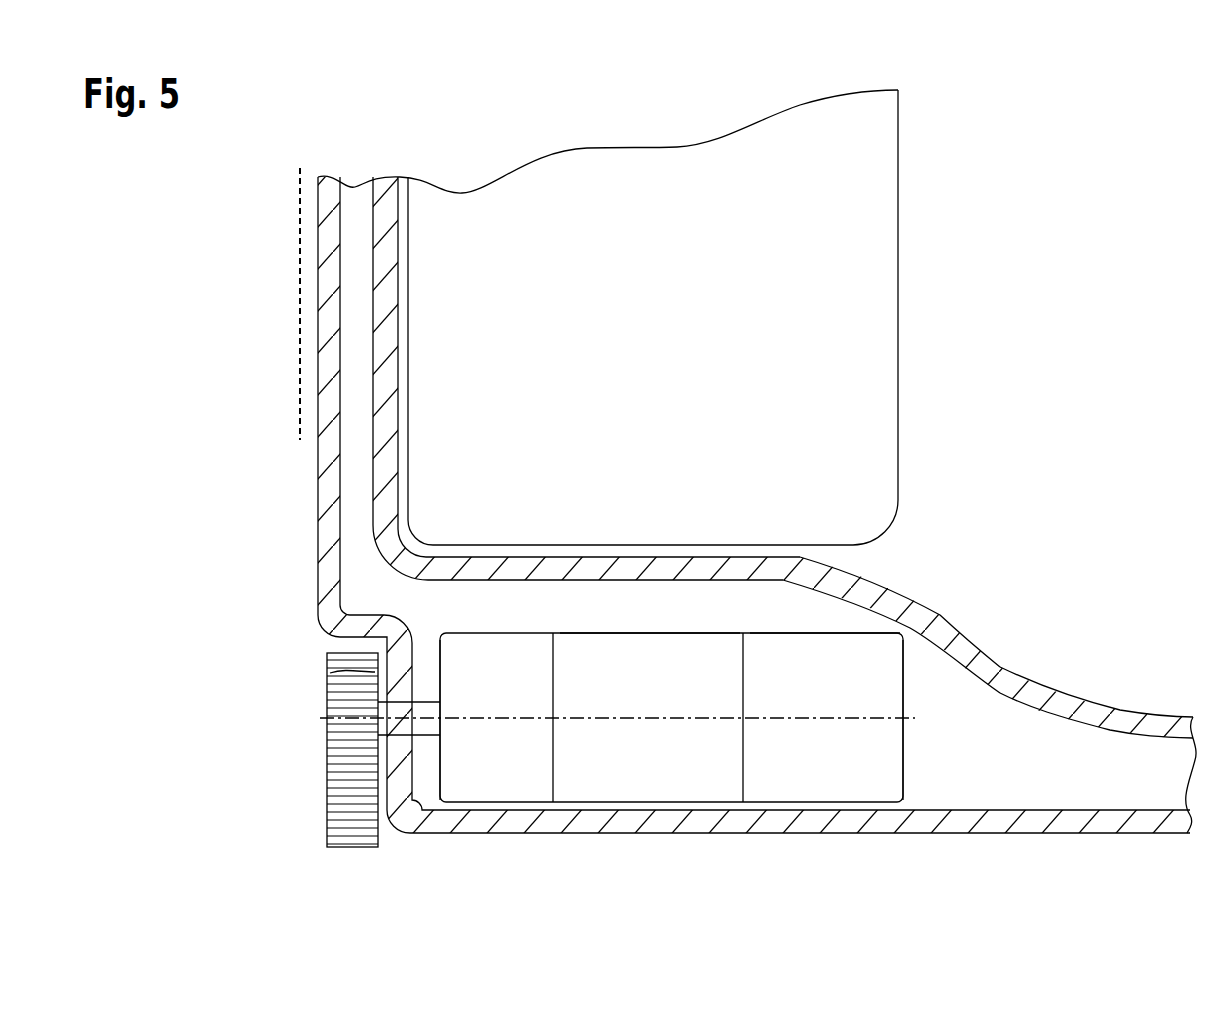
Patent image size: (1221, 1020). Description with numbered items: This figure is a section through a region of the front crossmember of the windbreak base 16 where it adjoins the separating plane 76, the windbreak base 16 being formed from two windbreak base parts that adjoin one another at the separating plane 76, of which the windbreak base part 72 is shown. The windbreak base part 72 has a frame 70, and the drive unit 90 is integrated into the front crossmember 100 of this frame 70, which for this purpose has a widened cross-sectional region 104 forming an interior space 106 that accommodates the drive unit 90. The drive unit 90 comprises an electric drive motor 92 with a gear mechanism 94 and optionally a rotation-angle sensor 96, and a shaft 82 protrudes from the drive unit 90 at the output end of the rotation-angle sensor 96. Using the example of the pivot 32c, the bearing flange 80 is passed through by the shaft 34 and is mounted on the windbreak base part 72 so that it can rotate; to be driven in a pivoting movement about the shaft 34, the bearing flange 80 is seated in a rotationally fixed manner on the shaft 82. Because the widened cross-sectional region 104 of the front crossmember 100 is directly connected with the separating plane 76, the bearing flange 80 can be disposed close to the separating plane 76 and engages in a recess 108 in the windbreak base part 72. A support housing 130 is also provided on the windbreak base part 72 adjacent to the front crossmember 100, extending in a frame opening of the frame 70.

The windbreak base 16 is at (862, 515).
The frame 70 is at (357, 178).
The windbreak base part 72 is at (1024, 676).
The separating plane 76 is at (300, 183).
The bearing flange 80 is at (365, 676).
The shaft 82 is at (380, 727).
The shaft 34 is at (348, 703).
The pivot 32c is at (352, 767).
The drive unit 90 is at (671, 635).
The electric drive motor 92 is at (802, 655).
The gear mechanism 94 is at (584, 655).
The rotation-angle sensor 96 is at (480, 655).
The front crossmember 100 is at (1036, 836).
The widened cross-sectional region 104 is at (727, 567).
The interior space 106 is at (840, 618).
The recess 108 is at (386, 648).
The support housing 130 is at (883, 211).